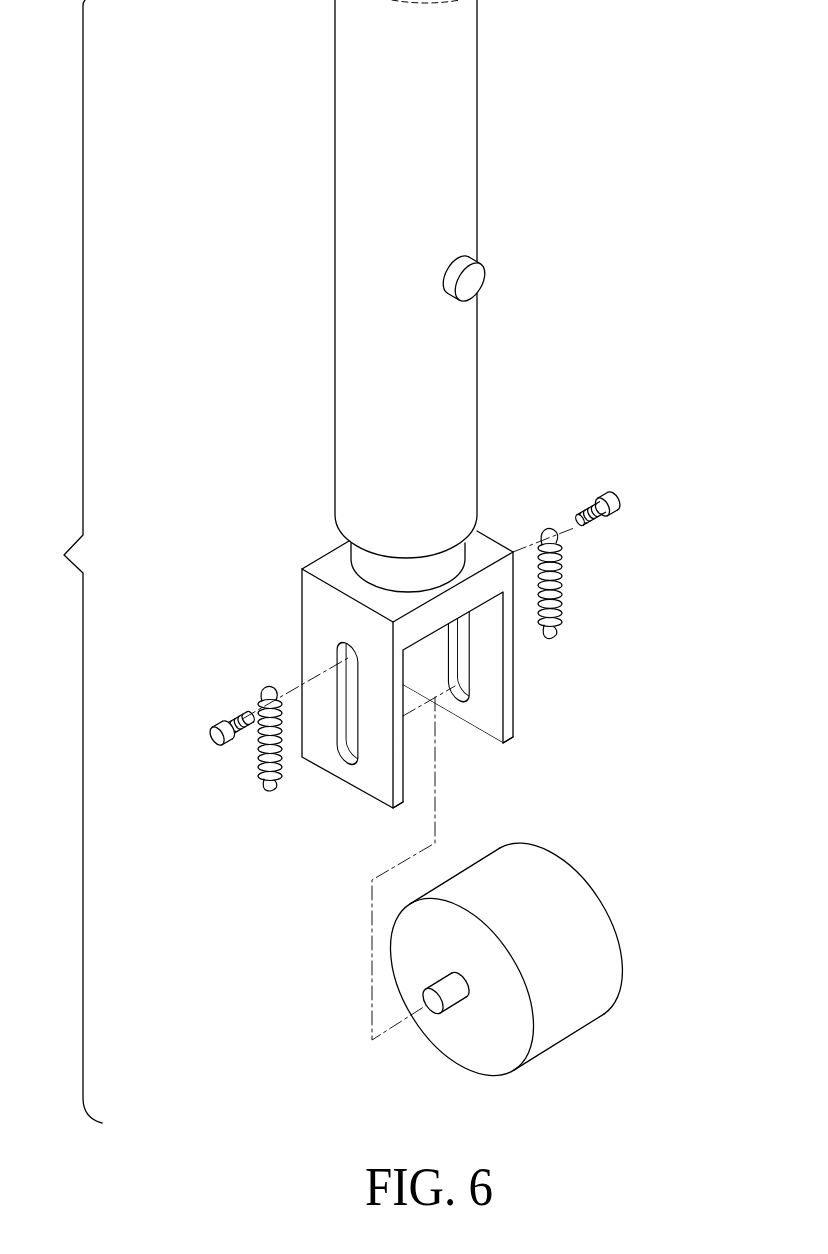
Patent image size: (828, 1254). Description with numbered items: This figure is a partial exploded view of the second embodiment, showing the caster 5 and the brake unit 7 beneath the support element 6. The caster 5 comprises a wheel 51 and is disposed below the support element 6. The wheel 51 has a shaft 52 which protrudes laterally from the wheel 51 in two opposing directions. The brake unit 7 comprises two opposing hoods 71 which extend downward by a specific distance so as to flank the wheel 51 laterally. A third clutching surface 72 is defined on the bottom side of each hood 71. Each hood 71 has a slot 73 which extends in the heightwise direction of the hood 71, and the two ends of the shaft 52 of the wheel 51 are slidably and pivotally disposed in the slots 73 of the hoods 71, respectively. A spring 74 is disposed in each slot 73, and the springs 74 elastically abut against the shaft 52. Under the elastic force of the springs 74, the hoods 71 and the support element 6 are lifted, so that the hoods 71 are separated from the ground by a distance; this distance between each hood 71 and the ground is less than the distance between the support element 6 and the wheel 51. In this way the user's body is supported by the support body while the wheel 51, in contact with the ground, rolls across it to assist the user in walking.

The caster 5 is at (606, 1040).
The wheel 51 is at (585, 888).
The shaft 52 is at (437, 1006).
The support element 6 is at (473, 394).
The brake unit 7 is at (190, 640).
The hood 71 is at (507, 650).
The third clutching surface 72 is at (508, 743).
The slot 73 is at (452, 688).
The spring 74 is at (562, 601).